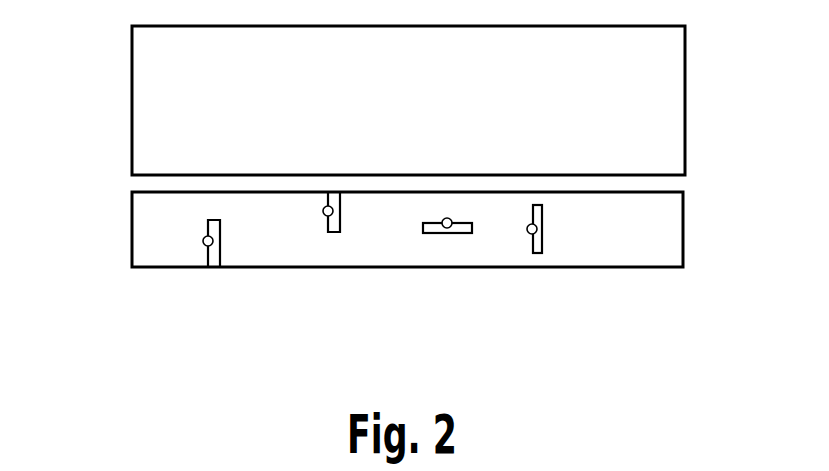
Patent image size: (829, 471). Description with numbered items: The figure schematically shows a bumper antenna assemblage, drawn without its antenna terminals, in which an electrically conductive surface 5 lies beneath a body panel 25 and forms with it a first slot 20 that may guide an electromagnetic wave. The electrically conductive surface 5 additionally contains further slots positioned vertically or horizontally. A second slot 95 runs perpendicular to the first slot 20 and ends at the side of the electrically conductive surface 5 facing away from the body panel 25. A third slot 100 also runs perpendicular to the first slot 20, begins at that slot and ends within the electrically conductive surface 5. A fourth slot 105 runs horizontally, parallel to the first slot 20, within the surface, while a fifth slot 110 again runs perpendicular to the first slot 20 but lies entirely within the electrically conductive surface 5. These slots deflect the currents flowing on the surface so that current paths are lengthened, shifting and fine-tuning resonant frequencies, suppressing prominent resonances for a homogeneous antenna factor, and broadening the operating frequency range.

The electrically conductive surface 5 is at (672, 237).
The first slot 20 is at (140, 184).
The body panel 25 is at (672, 84).
The second slot 95 is at (215, 262).
The third slot 100 is at (333, 226).
The fourth slot 105 is at (460, 232).
The fifth slot 110 is at (540, 240).